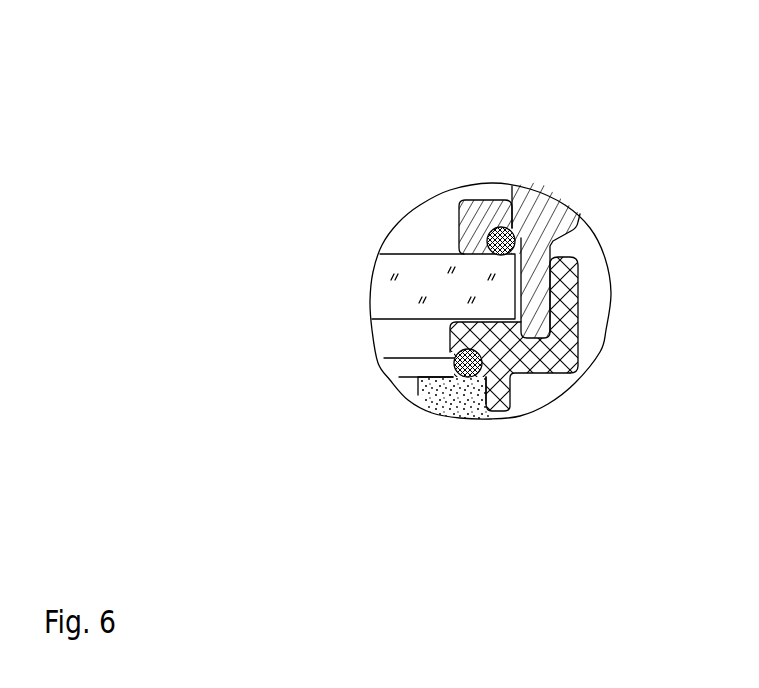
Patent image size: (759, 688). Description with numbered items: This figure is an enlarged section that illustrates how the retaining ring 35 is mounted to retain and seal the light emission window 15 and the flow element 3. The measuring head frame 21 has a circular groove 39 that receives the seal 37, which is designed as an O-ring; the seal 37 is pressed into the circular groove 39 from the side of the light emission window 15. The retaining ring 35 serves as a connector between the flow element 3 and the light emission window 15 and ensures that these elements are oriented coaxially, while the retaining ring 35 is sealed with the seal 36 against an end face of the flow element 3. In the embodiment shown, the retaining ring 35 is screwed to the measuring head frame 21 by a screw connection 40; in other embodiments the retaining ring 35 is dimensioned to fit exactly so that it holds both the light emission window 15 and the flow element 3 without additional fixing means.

The flow element 3 is at (477, 396).
The light emission window 15 is at (387, 269).
The measuring head frame 21 is at (548, 199).
The retaining ring 35 is at (578, 257).
The seal 36 is at (400, 357).
The seal 37 is at (514, 226).
The circular groove 39 is at (465, 215).
The screw connection 40 is at (557, 318).